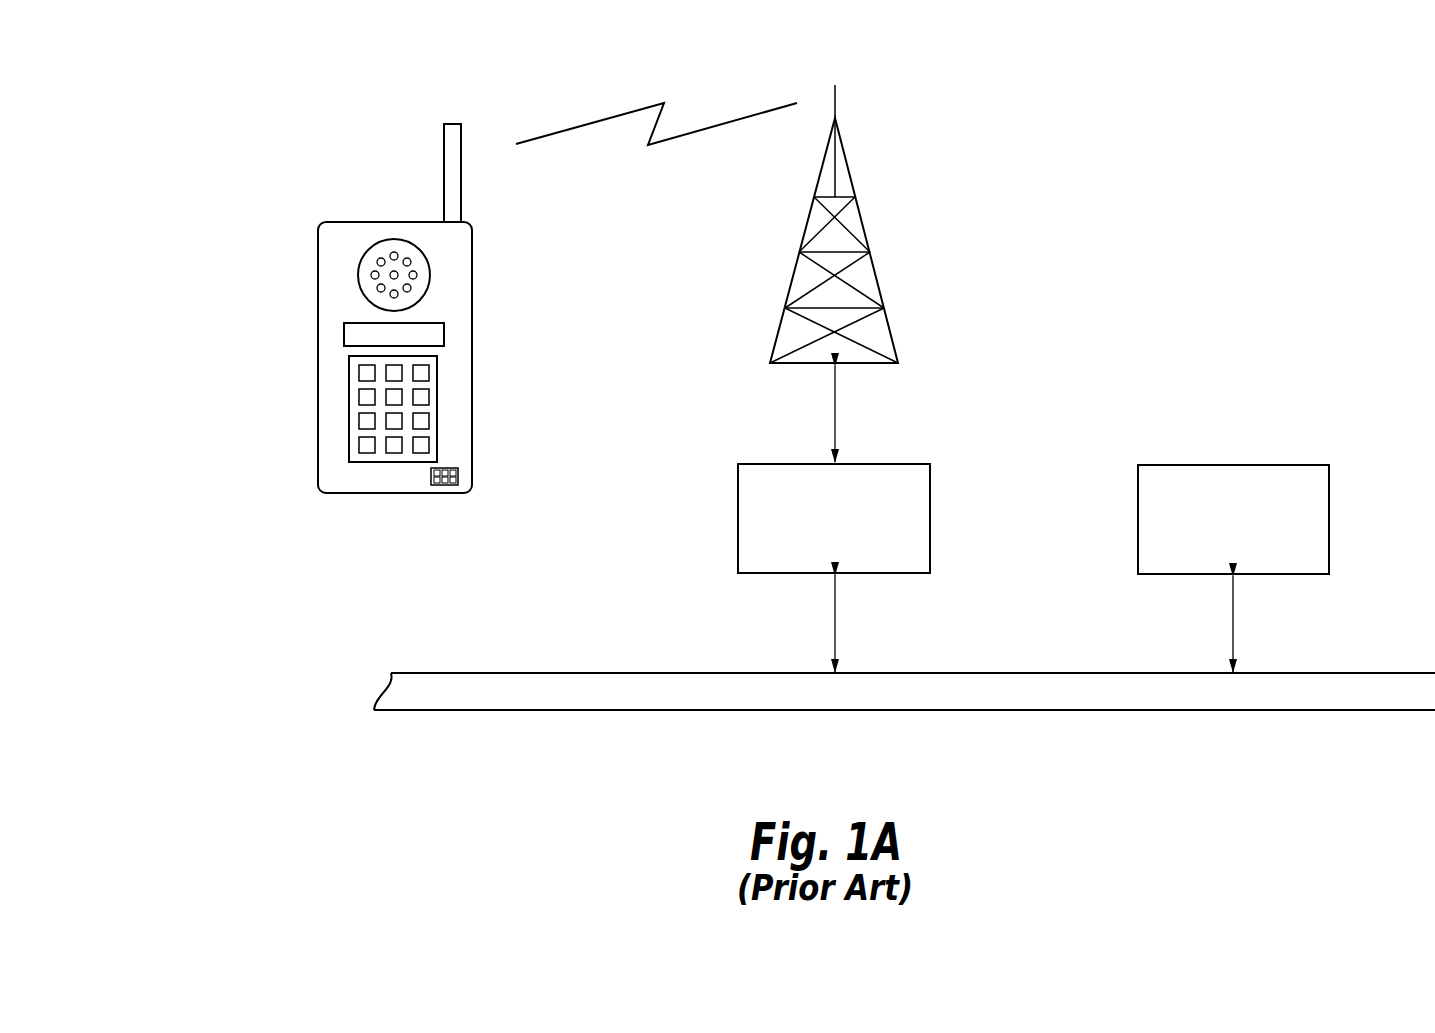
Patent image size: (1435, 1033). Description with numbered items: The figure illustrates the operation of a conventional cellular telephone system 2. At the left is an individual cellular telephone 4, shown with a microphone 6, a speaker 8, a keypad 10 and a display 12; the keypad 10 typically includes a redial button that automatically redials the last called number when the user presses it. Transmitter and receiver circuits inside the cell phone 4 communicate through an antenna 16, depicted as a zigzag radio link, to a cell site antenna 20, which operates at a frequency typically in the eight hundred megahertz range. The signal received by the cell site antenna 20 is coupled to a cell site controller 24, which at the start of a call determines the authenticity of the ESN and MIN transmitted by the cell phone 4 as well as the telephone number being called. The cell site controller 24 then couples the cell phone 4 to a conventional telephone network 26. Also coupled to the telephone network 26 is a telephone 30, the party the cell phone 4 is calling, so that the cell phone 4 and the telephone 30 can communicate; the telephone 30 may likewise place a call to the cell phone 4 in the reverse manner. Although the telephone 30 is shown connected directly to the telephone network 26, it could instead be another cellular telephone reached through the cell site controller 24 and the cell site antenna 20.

The cellular telephone system 2 is at (226, 621).
The cellular telephone 4 is at (318, 471).
The microphone 6 is at (450, 486).
The speaker 8 is at (429, 283).
The keypad 10 is at (437, 402).
The display 12 is at (444, 332).
The antenna 16 is at (444, 182).
The cell site antenna 20 is at (853, 177).
The cell site controller 24 is at (930, 528).
The telephone network 26 is at (992, 673).
The telephone 30 is at (1329, 517).